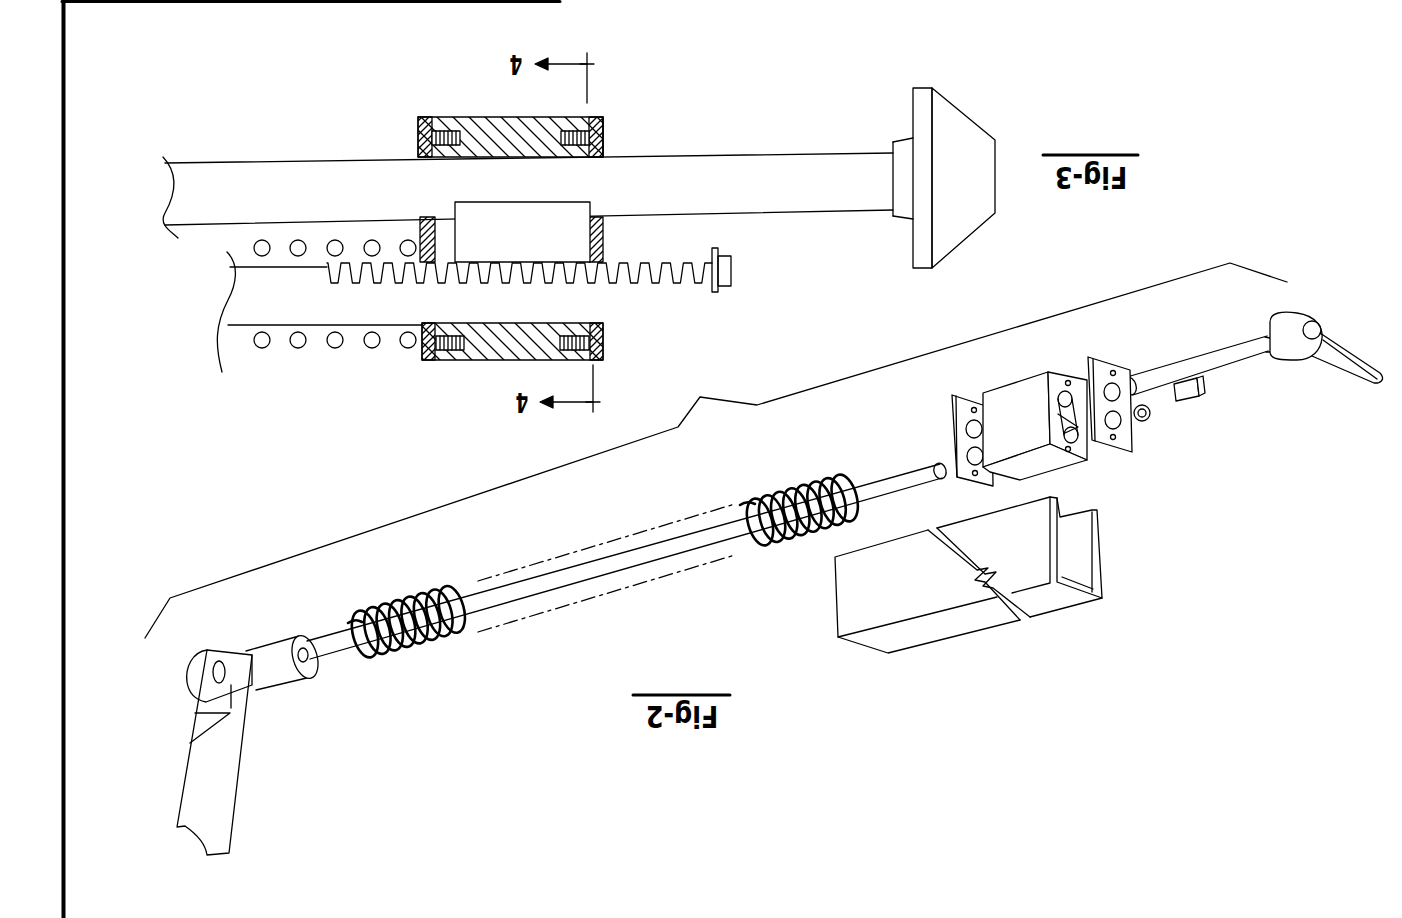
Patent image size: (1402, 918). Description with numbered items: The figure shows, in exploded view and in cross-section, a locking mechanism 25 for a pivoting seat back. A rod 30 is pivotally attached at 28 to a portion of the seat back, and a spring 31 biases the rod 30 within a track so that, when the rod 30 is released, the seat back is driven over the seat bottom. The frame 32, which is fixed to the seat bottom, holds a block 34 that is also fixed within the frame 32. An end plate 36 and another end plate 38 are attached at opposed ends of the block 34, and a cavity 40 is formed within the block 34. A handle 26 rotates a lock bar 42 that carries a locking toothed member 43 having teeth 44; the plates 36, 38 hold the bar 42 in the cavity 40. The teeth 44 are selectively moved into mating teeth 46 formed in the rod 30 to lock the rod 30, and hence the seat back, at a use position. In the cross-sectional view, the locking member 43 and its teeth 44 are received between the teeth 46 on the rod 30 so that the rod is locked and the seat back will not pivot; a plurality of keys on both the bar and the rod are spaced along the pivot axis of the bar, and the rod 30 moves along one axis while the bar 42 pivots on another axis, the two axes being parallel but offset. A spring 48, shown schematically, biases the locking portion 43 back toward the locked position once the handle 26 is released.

In FIG. 2, the mechanism 25 is at (716, 450).
In FIG. 3, the handle 26 is at (977, 153).
In FIG. 2, the handle 26 is at (1313, 330).
In FIG. 2, the pivotal attachment 28 is at (220, 668).
In FIG. 3, the rod 30 is at (313, 327).
In FIG. 2, the rod 30 is at (300, 678).
In FIG. 3, the spring 31 is at (337, 348).
In FIG. 2, the spring 31 is at (423, 660).
In FIG. 2, the frame 32 is at (933, 632).
In FIG. 3, the block 34 is at (495, 342).
In FIG. 2, the block 34 is at (1025, 392).
In FIG. 3, the end plate 36 is at (597, 110).
In FIG. 2, the end plate 36 is at (1125, 450).
In FIG. 3, the end plate 38 is at (417, 120).
In FIG. 2, the end plate 38 is at (950, 425).
In FIG. 2, the cavity 40 is at (1063, 397).
In FIG. 3, the lock bar 42 is at (300, 175).
In FIG. 2, the lock bar 42 is at (1247, 357).
In FIG. 3, the locking toothed member 43 is at (555, 220).
In FIG. 2, the locking toothed member 43 is at (1183, 383).
In FIG. 2, the teeth 44 is at (1243, 444).
In FIG. 3, the mating teeth 46 is at (643, 253).
In FIG. 2, the mating teeth 46 is at (903, 472).
In FIG. 2, the spring 48 is at (1152, 418).